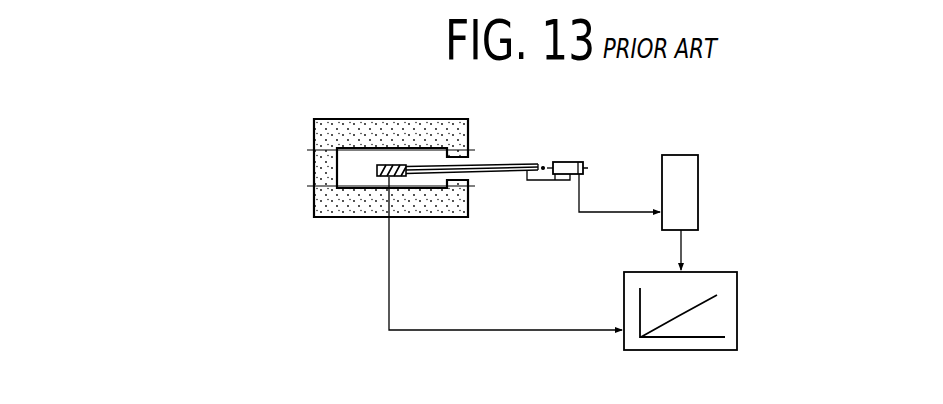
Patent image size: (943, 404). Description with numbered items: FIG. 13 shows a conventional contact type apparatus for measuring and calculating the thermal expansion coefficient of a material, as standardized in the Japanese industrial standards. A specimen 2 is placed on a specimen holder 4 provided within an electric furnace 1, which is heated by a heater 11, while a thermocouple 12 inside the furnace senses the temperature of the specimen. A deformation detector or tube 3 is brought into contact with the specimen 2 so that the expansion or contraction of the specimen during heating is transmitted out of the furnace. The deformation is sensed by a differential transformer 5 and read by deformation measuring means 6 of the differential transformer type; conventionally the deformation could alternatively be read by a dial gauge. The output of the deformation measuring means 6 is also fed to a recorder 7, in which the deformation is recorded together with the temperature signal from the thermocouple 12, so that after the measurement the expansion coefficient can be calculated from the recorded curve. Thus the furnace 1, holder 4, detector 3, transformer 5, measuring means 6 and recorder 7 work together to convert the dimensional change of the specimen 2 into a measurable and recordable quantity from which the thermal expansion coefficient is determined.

The electric furnace 1 is at (423, 118).
The specimen 2 is at (389, 165).
The deformation detector or tube 3 is at (537, 163).
The specimen holder 4 is at (498, 162).
The differential transformer 5 is at (575, 161).
The deformation measuring means 6 is at (690, 198).
The recorder 7 is at (632, 300).
The heater 11 is at (312, 188).
The thermocouple 12 is at (389, 179).